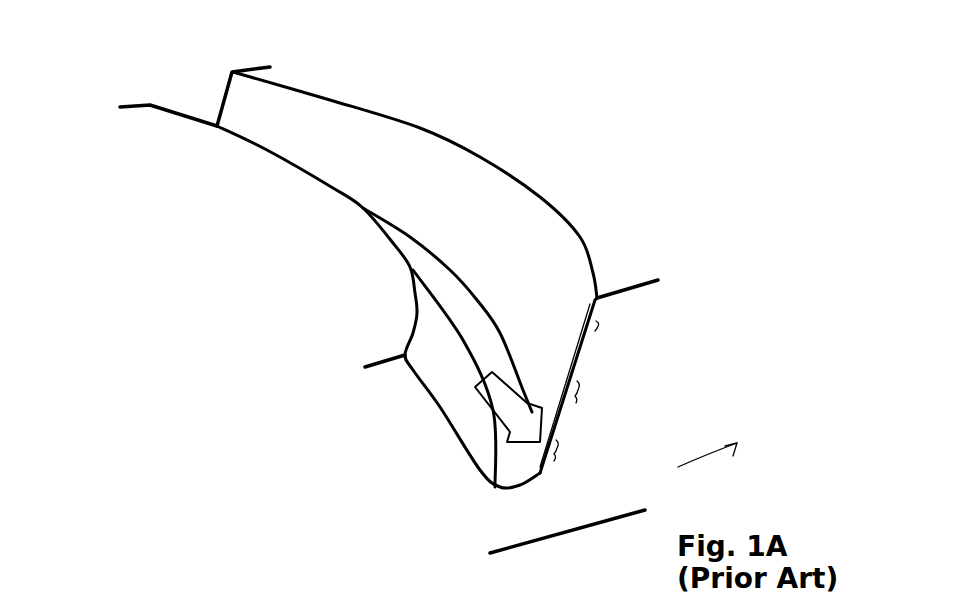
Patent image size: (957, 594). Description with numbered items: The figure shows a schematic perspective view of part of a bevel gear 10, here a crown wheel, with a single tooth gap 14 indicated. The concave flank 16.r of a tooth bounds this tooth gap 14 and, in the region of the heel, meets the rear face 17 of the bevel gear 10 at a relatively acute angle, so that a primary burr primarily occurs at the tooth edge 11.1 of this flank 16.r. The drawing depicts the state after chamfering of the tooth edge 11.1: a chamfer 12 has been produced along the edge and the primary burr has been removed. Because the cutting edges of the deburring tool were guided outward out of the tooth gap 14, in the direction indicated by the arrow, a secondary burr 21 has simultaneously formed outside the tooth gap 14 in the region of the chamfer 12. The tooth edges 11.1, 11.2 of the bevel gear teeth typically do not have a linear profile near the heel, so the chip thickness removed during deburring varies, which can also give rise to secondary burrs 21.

The bevel gear 10 is at (62, 17).
The tooth gap 14 is at (197, 95).
The concave flank 16.r is at (383, 140).
The tooth edge 11.1 is at (583, 340).
The tooth edge 11.2 is at (420, 377).
The chamfer 12 is at (579, 351).
The secondary burr 21 is at (570, 400).
The rear face 17 is at (590, 498).